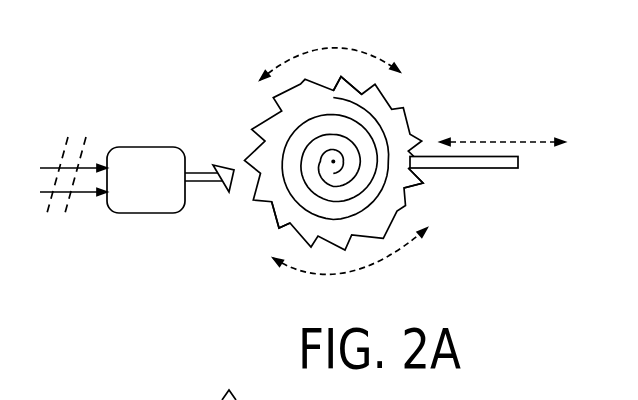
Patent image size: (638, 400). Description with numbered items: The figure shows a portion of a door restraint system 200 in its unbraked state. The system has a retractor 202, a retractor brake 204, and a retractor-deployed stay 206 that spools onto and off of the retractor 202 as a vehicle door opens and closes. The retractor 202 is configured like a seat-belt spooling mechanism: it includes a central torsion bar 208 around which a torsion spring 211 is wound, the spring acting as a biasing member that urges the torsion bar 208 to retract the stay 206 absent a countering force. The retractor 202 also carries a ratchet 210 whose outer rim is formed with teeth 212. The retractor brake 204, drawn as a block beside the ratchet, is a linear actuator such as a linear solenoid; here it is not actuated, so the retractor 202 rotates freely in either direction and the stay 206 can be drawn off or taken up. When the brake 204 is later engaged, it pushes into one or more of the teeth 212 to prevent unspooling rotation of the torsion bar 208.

The door restraint system 200 is at (293, 164).
The retractor 202 is at (410, 78).
The retractor brake 204 is at (152, 147).
The retractor-deployed stay 206 is at (493, 170).
The torsion bar 208 is at (335, 162).
The ratchet 210 is at (345, 63).
The torsion spring 211 is at (380, 196).
The teeth 212 is at (280, 226).